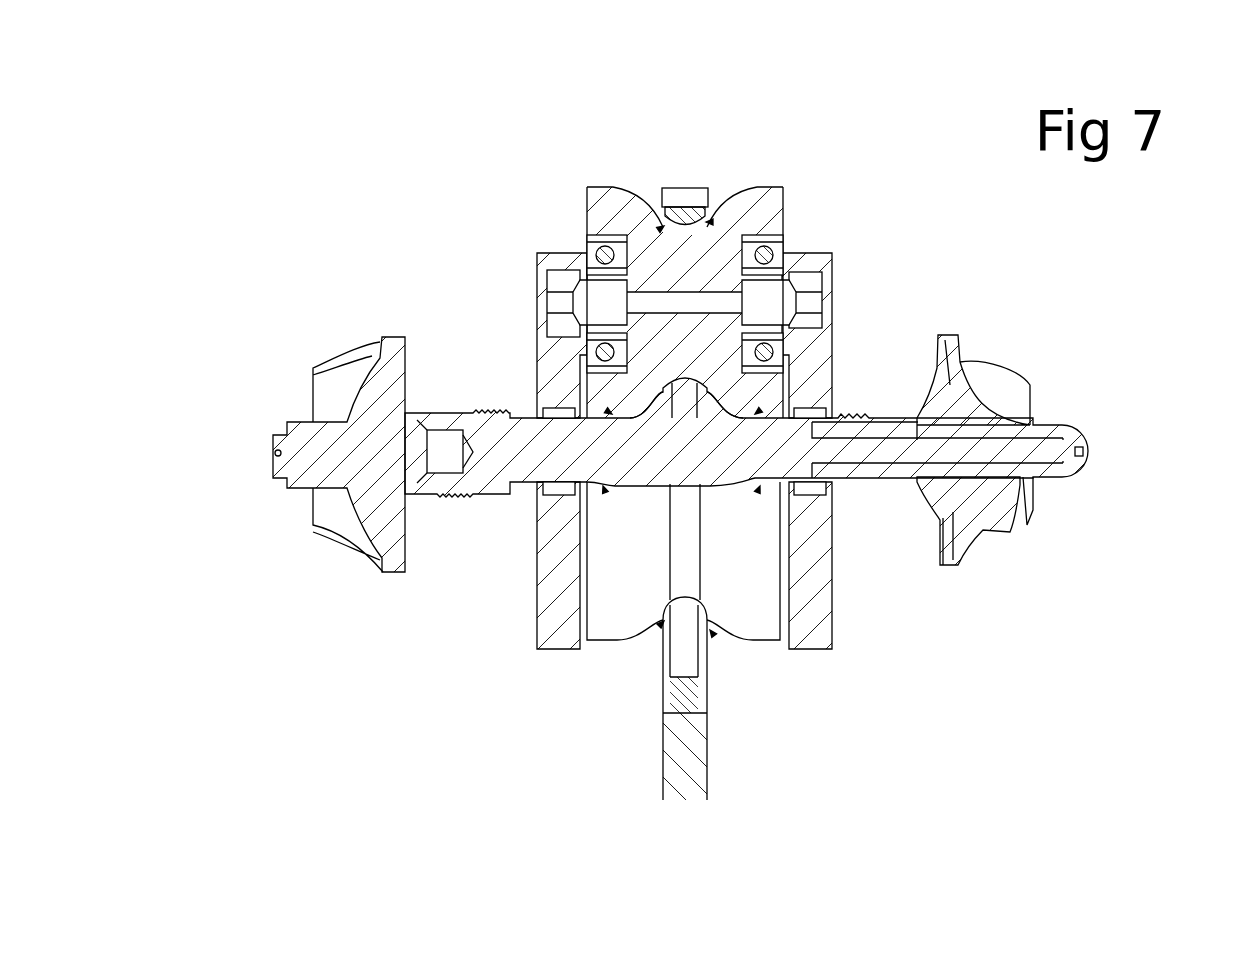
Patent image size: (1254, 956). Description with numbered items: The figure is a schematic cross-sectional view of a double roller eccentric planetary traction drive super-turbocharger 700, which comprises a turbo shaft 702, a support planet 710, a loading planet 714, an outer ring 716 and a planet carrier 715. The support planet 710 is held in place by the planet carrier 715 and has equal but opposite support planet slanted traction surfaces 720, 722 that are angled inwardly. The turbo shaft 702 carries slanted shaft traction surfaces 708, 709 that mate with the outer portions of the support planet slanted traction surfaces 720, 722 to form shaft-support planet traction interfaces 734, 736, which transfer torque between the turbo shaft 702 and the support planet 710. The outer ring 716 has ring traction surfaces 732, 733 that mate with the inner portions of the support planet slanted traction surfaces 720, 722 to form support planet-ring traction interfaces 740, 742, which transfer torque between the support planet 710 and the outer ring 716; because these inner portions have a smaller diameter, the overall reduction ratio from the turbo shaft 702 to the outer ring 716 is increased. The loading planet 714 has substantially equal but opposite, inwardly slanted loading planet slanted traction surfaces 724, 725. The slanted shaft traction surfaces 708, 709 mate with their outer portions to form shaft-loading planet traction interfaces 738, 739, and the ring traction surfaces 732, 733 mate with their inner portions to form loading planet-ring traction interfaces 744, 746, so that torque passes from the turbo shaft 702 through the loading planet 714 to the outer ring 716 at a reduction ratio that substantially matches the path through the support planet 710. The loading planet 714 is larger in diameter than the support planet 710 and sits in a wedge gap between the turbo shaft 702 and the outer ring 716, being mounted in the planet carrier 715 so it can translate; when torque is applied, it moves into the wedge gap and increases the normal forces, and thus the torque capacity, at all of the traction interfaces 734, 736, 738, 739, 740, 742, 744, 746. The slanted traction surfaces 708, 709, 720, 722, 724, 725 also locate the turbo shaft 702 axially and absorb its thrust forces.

The eccentric planetary traction drive super-turbocharger 700 is at (680, 471).
The turbo shaft 702 is at (1030, 506).
The slanted shaft traction surface 708 is at (640, 402).
The slanted shaft traction surface 709 is at (760, 404).
The support planet 710 is at (632, 548).
The loading planet 714 is at (612, 212).
The planet carrier 715 is at (825, 652).
The outer ring 716 is at (686, 697).
The support planet slanted traction surface 720 is at (587, 650).
The support planet slanted traction surface 722 is at (753, 642).
The loading planet slanted traction surface 724 is at (615, 192).
The loading planet slanted traction surface 725 is at (737, 189).
The ring traction surface 732 is at (662, 628).
The ring traction surface 733 is at (710, 625).
The shaft-support planet traction interface 734 is at (604, 488).
The shaft-support planet traction interface 736 is at (759, 488).
The shaft-loading planet traction interface 738 is at (610, 412).
The shaft-loading planet traction interface 739 is at (757, 412).
The support planet-ring traction interface 740 is at (662, 623).
The support planet-ring traction interface 742 is at (712, 633).
The loading planet-ring traction interface 744 is at (662, 228).
The loading planet-ring traction interface 746 is at (708, 222).